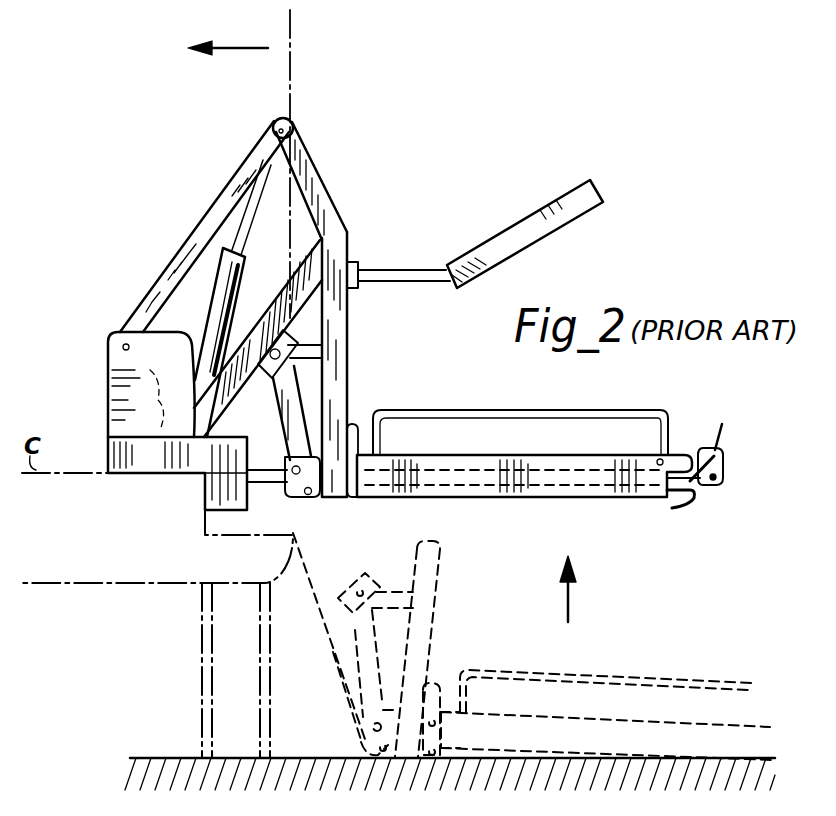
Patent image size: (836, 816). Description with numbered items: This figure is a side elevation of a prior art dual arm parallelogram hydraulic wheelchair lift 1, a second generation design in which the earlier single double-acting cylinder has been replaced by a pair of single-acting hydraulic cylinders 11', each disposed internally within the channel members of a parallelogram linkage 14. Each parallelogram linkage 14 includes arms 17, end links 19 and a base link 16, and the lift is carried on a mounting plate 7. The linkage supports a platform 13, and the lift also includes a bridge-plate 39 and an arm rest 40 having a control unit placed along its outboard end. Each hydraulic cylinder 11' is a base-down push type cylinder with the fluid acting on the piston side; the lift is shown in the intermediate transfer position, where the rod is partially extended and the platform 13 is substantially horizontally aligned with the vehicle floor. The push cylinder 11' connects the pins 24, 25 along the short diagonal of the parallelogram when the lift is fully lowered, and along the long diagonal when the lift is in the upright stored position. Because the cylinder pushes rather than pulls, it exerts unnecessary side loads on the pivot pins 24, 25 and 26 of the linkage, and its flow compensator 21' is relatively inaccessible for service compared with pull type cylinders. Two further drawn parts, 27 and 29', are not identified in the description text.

The wheelchair lift 1 is at (238, 156).
The mounting plate 7 is at (108, 450).
The single-acting hydraulic cylinder 11' is at (242, 298).
The platform 13 is at (563, 497).
The parallelogram linkage 14 is at (301, 139).
The base link 16 is at (108, 392).
The arm 17 is at (207, 227).
The end link 19 is at (324, 198).
The flow compensator 21' is at (166, 387).
The pivot pin 24 is at (175, 462).
The pivot pin 25 is at (275, 124).
The pivot pin 26 is at (120, 347).
The vertical post 27 is at (345, 238).
The link 29' is at (276, 413).
The bridge-plate 39 is at (62, 472).
The arm rest 40 is at (522, 226).